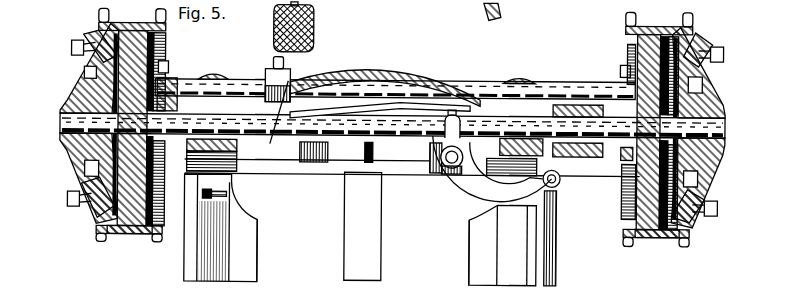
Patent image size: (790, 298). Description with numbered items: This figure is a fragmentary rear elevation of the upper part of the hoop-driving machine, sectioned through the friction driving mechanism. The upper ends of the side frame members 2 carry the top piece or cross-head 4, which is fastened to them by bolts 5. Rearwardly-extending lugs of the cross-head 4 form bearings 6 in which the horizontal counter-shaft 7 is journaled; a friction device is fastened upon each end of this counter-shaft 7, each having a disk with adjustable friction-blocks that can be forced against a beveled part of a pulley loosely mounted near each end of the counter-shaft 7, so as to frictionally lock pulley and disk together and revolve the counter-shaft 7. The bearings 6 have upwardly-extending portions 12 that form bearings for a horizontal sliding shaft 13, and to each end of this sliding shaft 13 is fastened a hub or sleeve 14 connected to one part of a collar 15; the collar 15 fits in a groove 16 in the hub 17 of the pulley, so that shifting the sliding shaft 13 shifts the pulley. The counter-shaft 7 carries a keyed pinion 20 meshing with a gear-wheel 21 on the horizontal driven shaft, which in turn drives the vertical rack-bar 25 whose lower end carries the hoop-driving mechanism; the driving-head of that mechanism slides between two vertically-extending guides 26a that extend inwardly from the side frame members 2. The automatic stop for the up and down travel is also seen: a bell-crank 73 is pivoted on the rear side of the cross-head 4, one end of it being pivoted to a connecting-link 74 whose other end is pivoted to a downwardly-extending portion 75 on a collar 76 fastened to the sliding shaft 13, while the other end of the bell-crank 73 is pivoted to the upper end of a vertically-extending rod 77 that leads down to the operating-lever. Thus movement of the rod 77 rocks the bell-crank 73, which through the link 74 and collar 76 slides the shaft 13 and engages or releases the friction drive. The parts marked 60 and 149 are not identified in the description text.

The side frame members 2 is at (360, 230).
The top piece or cross-head 4 is at (447, 111).
The bolts 5 is at (230, 192).
The bearings 6 is at (188, 152).
The counter-shaft 7 is at (60, 123).
The upwardly-extending portions 12 is at (215, 69).
The sliding shaft 13 is at (452, 84).
The hub or sleeve 14 is at (165, 68).
The collar 15 is at (620, 157).
The groove 16 is at (608, 152).
The hub 17 is at (172, 95).
The pinion 20 is at (570, 101).
The gear-wheel 21 is at (626, 266).
The vertical rack-bar 25 is at (363, 226).
The vertically-extending guides 26a is at (363, 252).
The handle 60 is at (500, 6).
The bell-crank 73 is at (492, 169).
The connecting-link 74 is at (303, 110).
The downwardly-extending portion 75 is at (276, 121).
The collar 76 is at (266, 76).
The vertically-extending rod 77 is at (560, 238).
The knob 149 is at (311, 27).